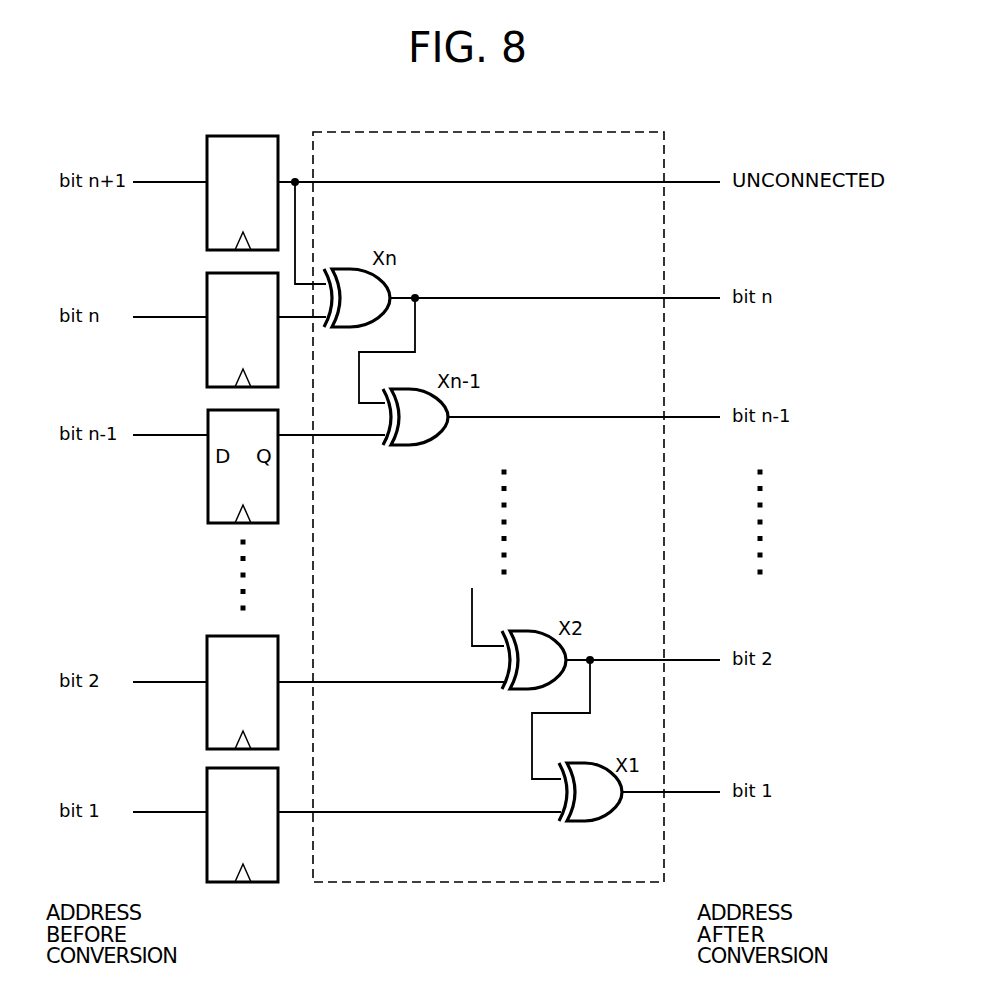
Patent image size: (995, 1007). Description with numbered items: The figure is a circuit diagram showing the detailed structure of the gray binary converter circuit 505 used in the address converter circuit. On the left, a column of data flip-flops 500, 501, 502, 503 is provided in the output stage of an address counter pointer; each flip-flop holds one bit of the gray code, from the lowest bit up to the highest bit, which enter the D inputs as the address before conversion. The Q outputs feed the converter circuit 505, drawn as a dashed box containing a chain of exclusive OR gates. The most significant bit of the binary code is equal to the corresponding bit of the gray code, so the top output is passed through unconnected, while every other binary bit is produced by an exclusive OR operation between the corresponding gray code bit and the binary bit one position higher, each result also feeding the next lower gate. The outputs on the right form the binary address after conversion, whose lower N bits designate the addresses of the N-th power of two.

The data flip-flop 500 is at (207, 854).
The data flip-flop 501 is at (207, 734).
The data flip-flop 502 is at (207, 369).
The data flip-flop 503 is at (207, 233).
The (N+1)-bit gray binary converter circuit 505 is at (664, 148).